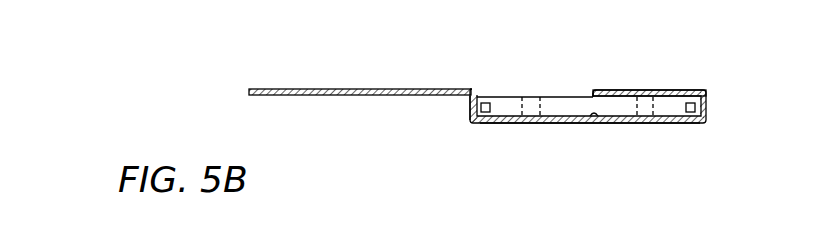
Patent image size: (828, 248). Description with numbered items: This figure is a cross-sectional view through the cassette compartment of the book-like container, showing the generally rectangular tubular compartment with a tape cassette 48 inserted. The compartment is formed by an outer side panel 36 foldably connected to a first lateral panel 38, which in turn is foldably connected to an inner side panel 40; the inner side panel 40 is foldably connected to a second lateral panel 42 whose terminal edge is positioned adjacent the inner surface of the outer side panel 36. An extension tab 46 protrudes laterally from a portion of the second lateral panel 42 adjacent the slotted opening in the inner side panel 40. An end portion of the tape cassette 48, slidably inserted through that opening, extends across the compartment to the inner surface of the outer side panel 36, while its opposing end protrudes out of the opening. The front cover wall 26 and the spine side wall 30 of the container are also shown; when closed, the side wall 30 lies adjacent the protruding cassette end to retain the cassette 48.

The front cover wall 26 is at (352, 96).
The side wall 30 is at (470, 104).
The outer side panel 36 is at (715, 107).
The first lateral panel 38 is at (662, 90).
The inner side panel 40 is at (583, 90).
The second lateral panel 42 is at (668, 124).
The extension tab 46 is at (598, 117).
The tape cassette 48 is at (517, 81).